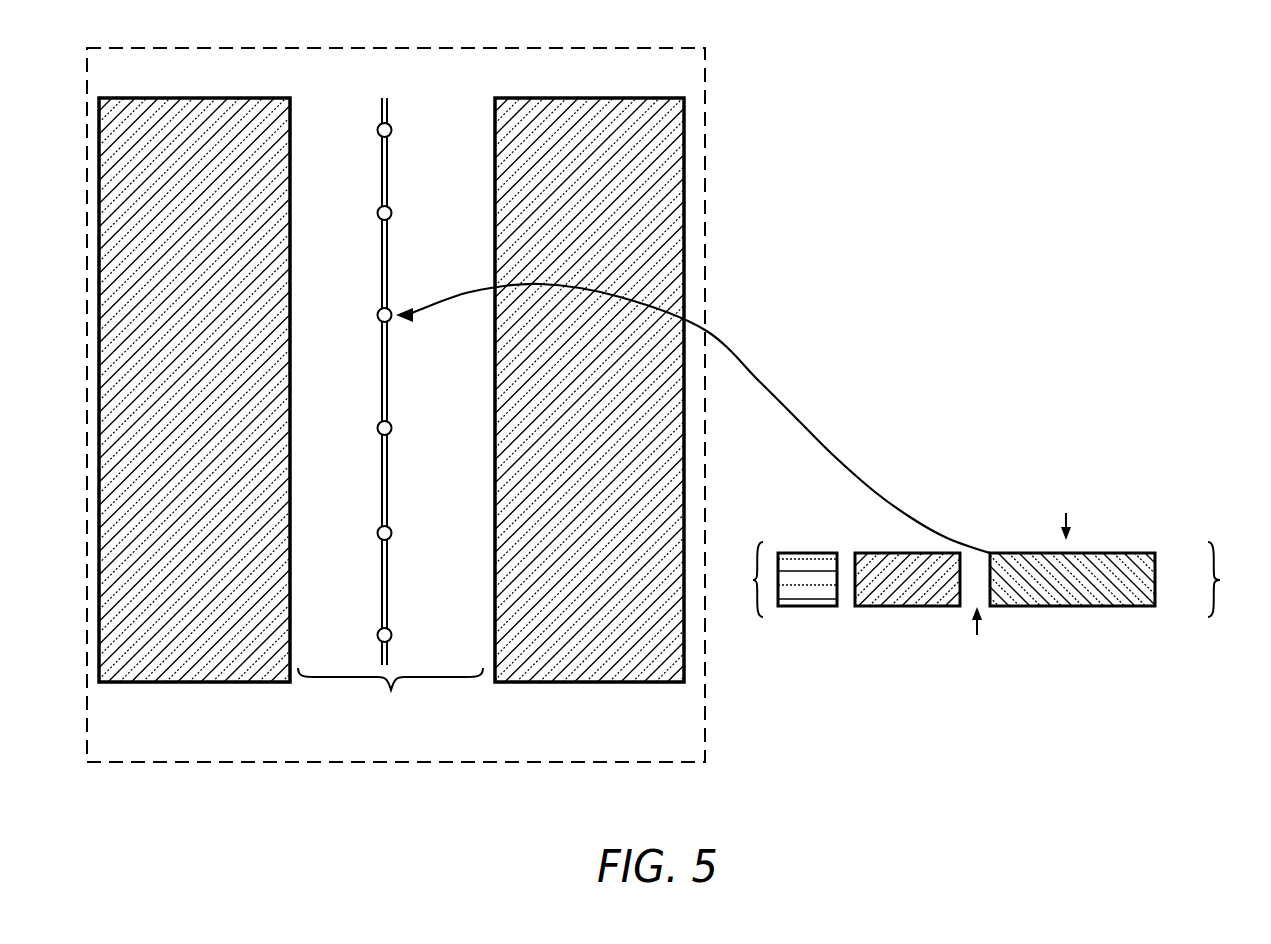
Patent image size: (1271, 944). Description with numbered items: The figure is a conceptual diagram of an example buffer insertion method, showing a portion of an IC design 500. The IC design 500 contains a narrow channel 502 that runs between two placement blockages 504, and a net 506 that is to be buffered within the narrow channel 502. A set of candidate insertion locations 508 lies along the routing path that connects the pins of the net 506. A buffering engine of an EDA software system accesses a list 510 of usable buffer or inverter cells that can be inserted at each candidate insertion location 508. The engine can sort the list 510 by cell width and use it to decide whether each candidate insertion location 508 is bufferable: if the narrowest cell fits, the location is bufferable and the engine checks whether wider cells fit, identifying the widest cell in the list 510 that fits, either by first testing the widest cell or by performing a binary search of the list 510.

The IC design 500 is at (636, 48).
The narrow channel 502 is at (415, 753).
The placement blockages 504 is at (222, 98).
The net 506 is at (388, 112).
The candidate insertion locations 508 is at (377, 129).
The list of usable buffer or inverter cells 510 is at (1001, 697).